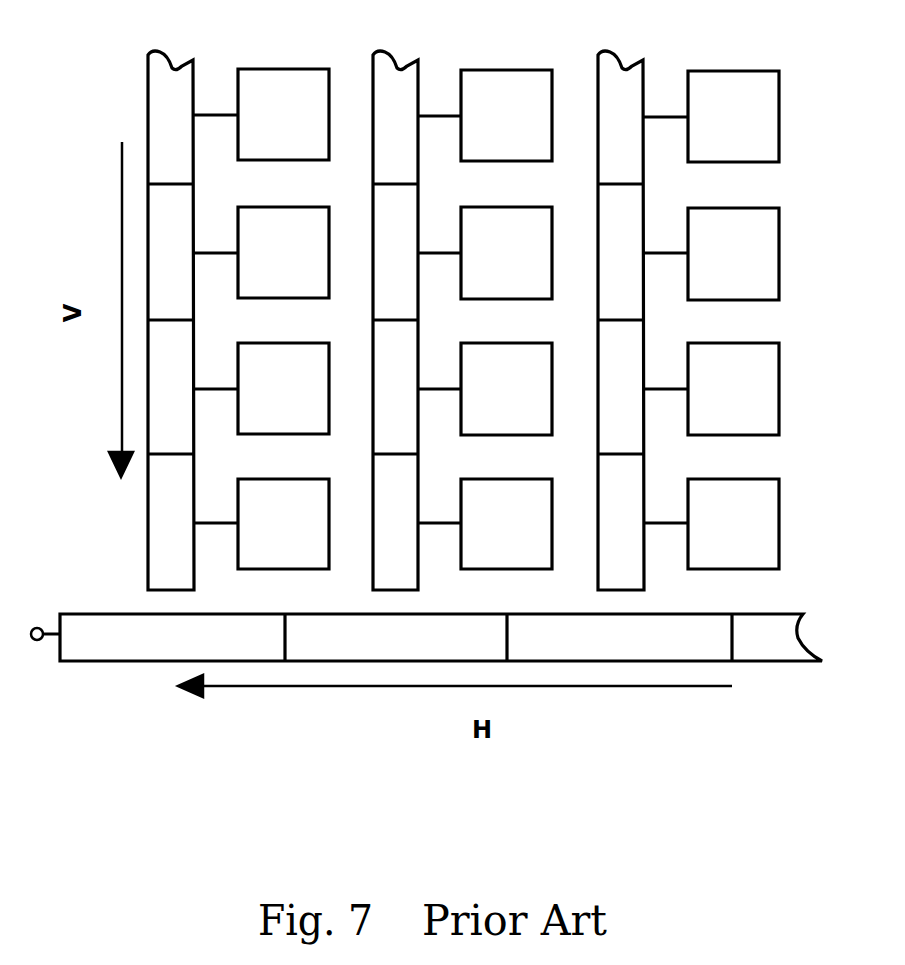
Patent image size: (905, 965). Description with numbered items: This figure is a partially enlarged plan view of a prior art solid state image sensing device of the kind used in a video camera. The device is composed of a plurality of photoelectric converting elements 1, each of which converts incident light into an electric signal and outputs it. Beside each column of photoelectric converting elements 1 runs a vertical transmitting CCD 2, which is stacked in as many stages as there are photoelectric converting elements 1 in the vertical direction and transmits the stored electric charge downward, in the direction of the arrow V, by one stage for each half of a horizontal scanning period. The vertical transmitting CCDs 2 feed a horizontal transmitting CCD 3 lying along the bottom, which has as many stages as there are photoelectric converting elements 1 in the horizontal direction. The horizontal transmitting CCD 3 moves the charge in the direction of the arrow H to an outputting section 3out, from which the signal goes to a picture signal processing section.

The photoelectric converting element 1 is at (287, 68).
The vertical transmitting CCD (VCCD) 2 is at (167, 97).
The horizontal transmitting CCD (HCCD) 3 is at (764, 642).
The outputting section 3out is at (37, 641).